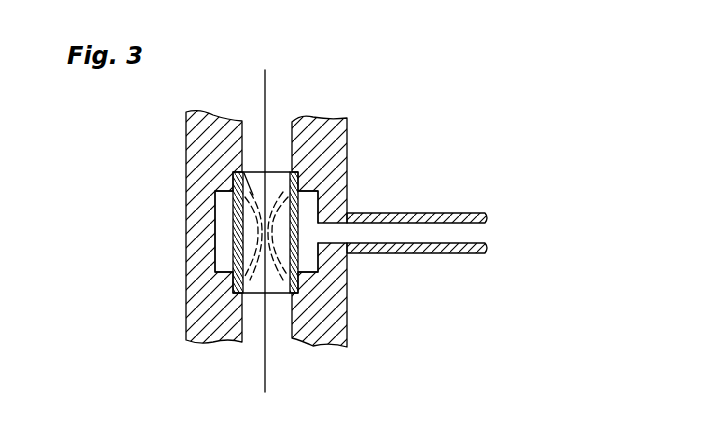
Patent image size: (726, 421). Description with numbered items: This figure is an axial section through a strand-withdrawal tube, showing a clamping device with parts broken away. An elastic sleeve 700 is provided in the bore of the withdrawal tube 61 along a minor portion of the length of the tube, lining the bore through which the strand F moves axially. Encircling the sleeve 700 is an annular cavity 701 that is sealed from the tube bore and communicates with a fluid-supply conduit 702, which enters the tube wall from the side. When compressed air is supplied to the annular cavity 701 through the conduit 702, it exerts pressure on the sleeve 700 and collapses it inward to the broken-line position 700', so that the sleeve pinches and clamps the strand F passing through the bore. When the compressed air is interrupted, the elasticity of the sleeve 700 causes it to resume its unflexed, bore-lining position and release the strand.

The withdrawal tube 61 is at (333, 303).
The elastic sleeve 700 is at (347, 205).
The broken-line position 700' is at (327, 168).
The annular cavity 701 is at (222, 250).
The fluid-supply conduit 702 is at (446, 250).
The strand F is at (263, 318).